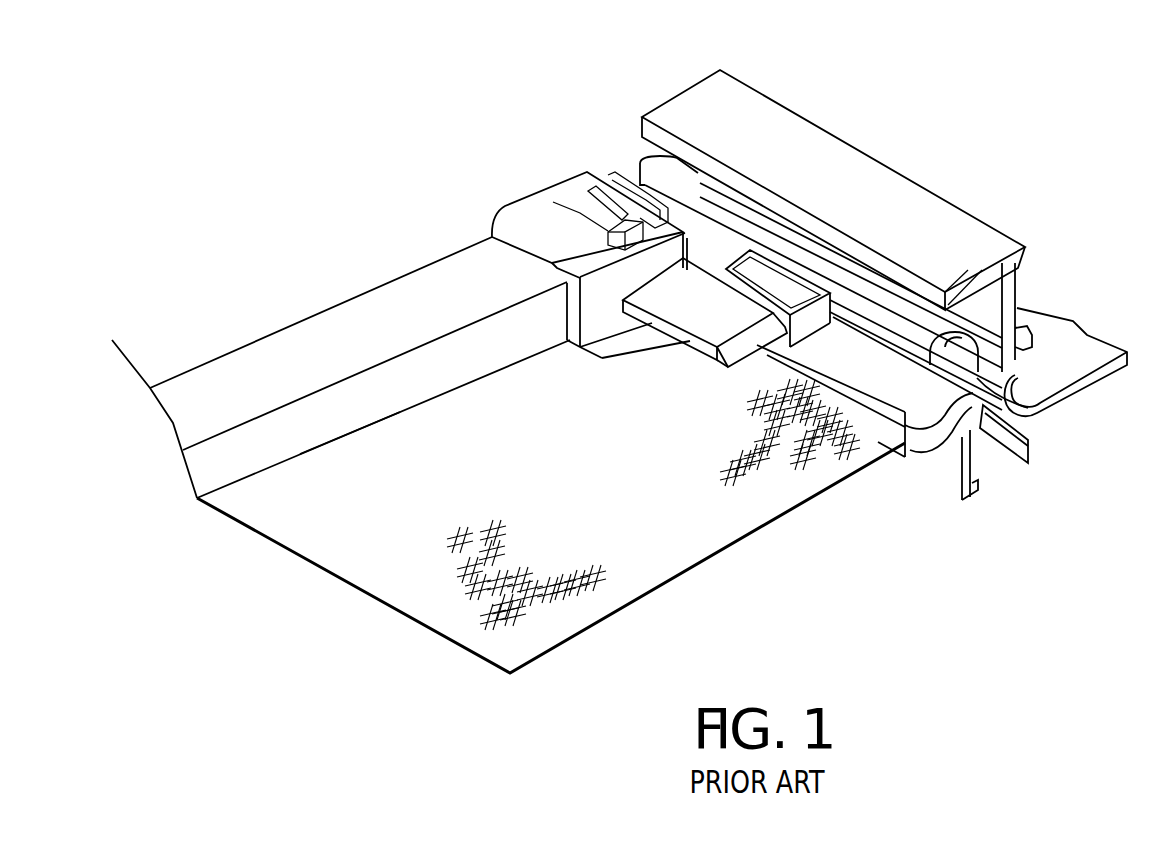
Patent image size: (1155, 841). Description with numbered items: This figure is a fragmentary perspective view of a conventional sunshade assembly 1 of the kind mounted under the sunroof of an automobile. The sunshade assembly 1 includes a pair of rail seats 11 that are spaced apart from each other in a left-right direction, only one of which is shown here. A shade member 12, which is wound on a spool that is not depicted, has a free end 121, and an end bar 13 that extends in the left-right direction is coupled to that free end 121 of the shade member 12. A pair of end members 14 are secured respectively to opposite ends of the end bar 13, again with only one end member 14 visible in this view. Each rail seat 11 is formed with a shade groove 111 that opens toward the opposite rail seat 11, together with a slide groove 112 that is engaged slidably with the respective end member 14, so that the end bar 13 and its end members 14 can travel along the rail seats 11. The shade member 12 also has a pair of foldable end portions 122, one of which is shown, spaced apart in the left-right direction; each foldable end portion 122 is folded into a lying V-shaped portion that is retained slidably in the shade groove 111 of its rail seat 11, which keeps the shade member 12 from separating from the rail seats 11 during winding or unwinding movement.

The sunshade assembly 1 is at (278, 266).
The rail seat 11 is at (975, 208).
The shade groove 111 is at (970, 412).
The slide groove 112 is at (957, 357).
The shade member 12 is at (766, 537).
The free end 121 is at (348, 435).
The foldable end portion 122 is at (965, 410).
The end bar 13 is at (372, 332).
The end member 14 is at (543, 228).